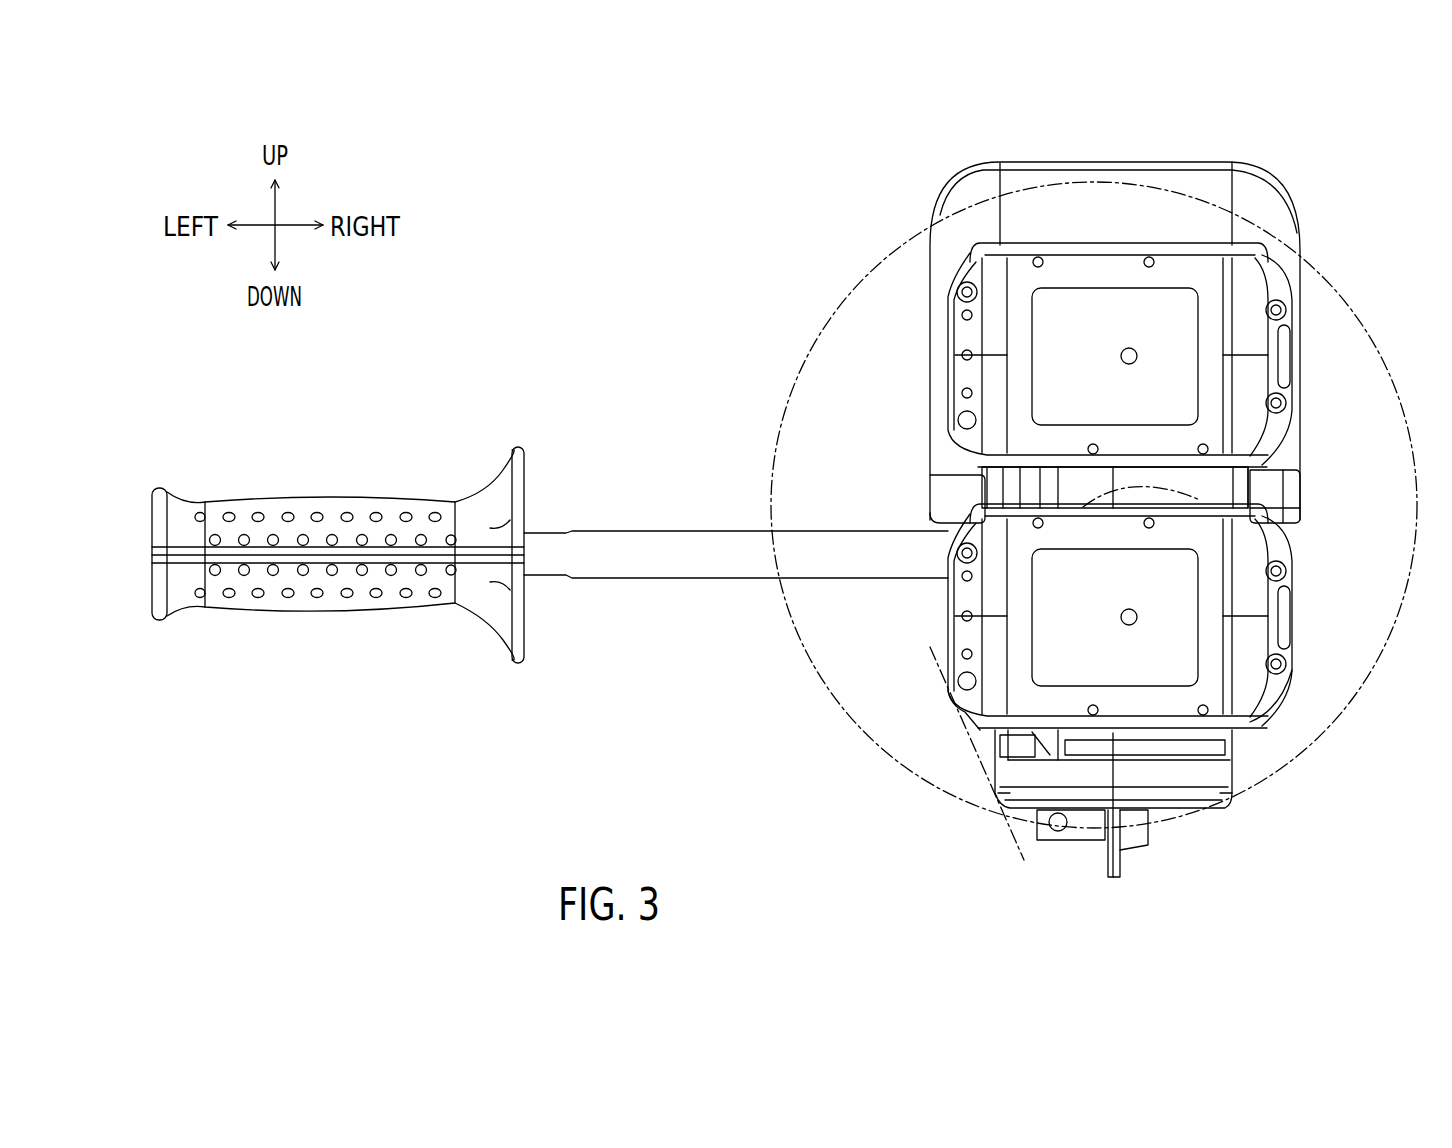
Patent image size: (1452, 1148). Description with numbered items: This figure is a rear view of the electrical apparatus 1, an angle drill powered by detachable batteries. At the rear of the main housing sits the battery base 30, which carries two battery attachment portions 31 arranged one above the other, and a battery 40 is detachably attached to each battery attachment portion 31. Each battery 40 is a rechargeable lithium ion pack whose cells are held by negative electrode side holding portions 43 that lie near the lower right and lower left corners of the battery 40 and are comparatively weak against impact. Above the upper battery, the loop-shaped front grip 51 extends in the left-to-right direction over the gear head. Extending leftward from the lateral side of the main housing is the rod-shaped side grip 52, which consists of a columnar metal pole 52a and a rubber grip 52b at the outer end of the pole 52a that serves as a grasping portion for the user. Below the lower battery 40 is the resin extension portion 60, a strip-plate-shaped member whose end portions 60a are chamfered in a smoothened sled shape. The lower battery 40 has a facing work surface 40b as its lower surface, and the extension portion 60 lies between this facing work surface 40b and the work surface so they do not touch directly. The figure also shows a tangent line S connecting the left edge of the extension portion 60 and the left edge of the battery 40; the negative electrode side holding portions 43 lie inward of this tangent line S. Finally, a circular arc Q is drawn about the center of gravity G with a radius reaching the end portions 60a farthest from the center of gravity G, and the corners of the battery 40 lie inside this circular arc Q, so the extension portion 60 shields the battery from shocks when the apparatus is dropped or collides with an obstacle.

The electrical apparatus 1 is at (663, 268).
The battery base 30 is at (1250, 484).
The battery attachment portion 31 is at (980, 476).
The battery 40 is at (1242, 289).
The facing work surface 40b is at (1097, 733).
The negative electrode side holding portion 43 is at (973, 725).
The front grip 51 is at (982, 163).
The side grip 52 is at (607, 503).
The pole 52a is at (710, 562).
The rubber grip 52b is at (392, 587).
The extension portion 60 is at (1180, 820).
The end portion 60a is at (1007, 810).
The center of gravity G is at (1277, 530).
The circular arc Q is at (837, 310).
The tangent line S is at (985, 768).